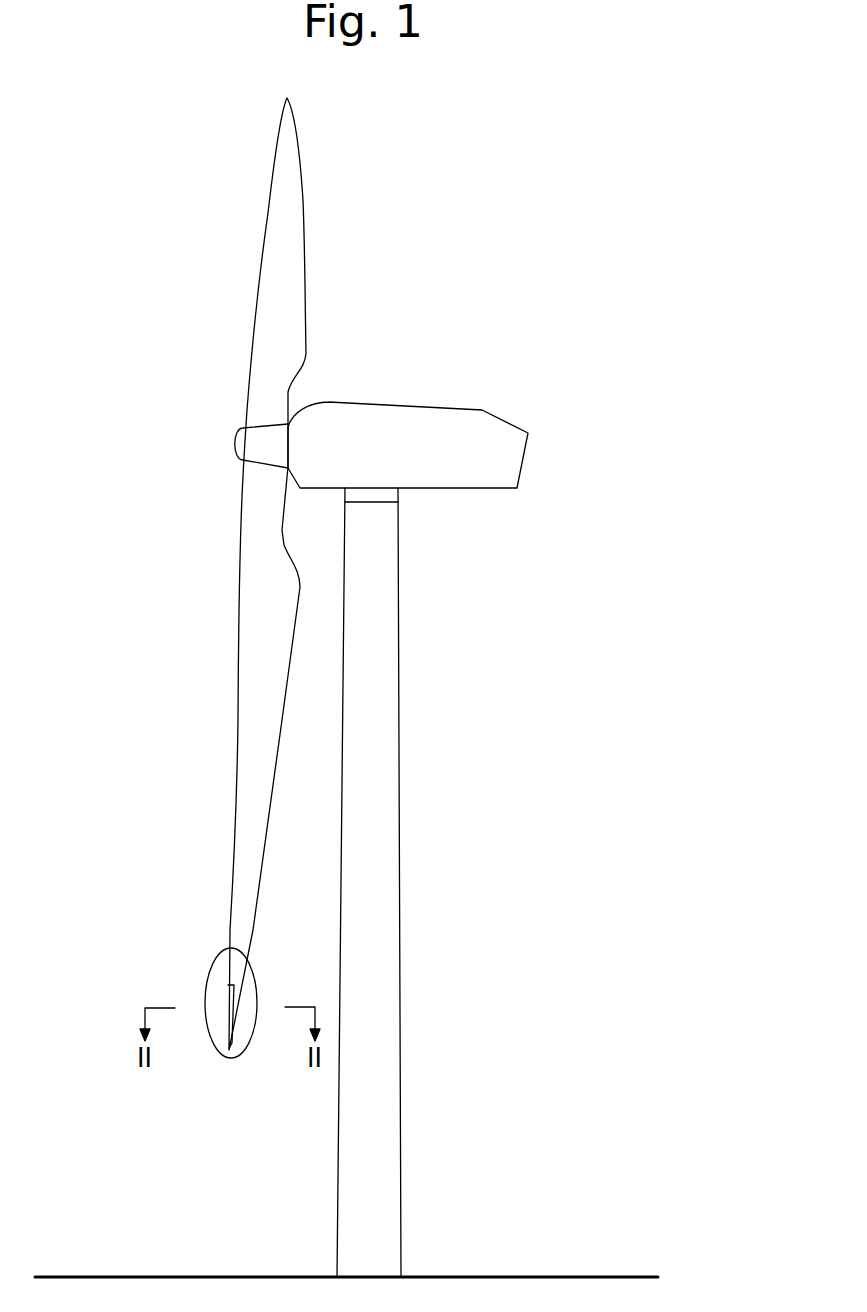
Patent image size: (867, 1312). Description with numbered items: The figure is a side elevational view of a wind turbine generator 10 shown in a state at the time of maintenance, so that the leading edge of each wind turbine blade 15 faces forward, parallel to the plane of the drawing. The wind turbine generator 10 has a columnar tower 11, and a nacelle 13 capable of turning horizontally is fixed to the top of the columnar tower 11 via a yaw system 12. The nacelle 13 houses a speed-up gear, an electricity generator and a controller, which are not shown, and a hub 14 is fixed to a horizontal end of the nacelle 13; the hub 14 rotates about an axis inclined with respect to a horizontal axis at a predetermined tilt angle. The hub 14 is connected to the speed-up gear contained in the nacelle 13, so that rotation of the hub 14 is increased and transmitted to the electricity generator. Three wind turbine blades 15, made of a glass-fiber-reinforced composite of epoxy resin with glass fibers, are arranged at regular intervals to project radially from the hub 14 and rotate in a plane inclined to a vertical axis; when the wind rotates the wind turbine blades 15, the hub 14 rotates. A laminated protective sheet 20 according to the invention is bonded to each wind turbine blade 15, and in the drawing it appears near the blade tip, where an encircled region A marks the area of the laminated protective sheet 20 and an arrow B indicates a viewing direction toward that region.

The wind turbine generator 10 is at (591, 160).
The columnar tower 11 is at (400, 913).
The yaw system 12 is at (393, 493).
The nacelle 13 is at (510, 423).
The hub 14 is at (247, 443).
The wind turbine blade 15 is at (258, 564).
The laminated protective sheet 20 is at (227, 1025).
The enlarged region A is at (208, 980).
The viewing direction B is at (204, 1066).